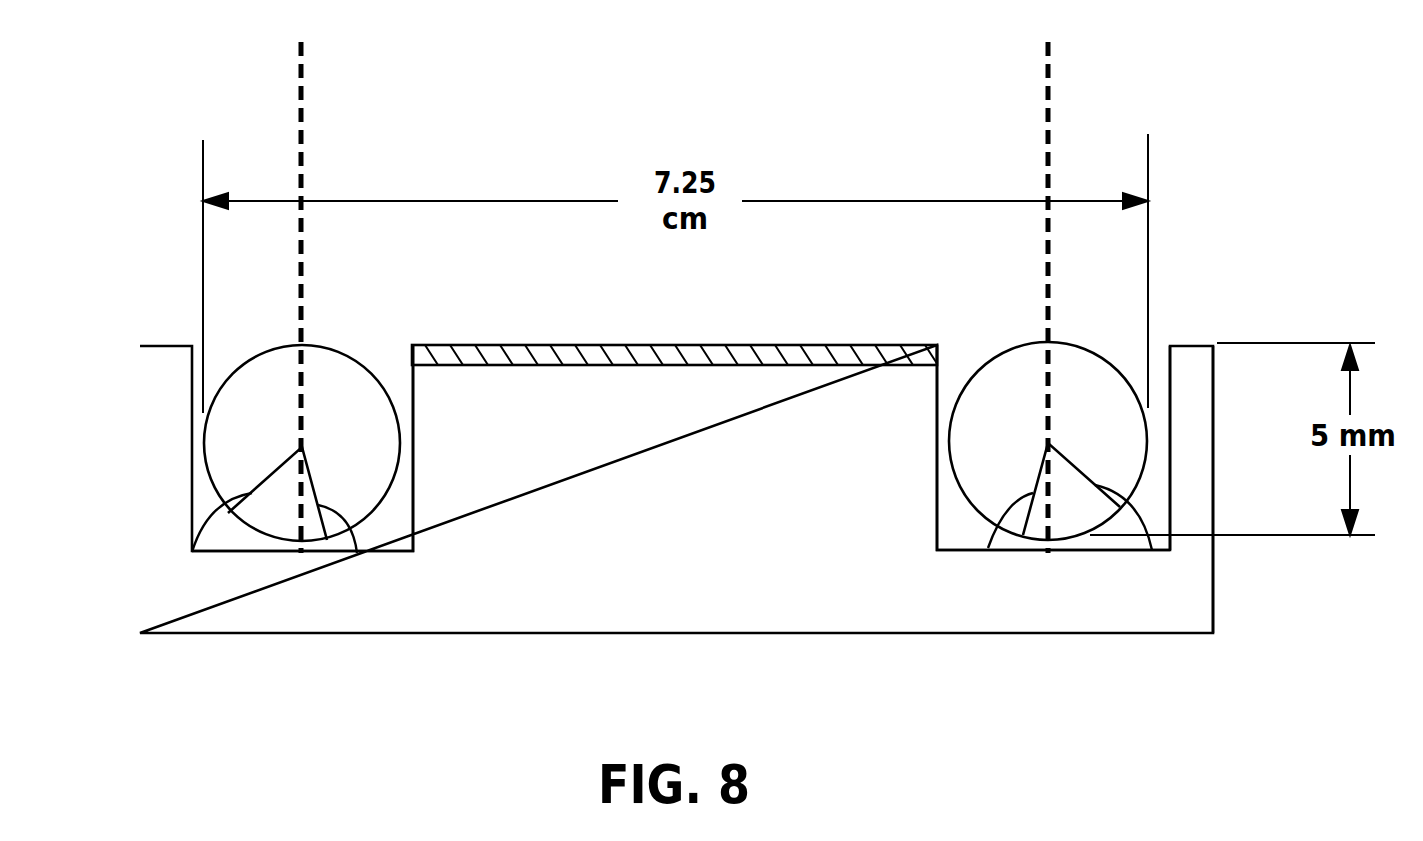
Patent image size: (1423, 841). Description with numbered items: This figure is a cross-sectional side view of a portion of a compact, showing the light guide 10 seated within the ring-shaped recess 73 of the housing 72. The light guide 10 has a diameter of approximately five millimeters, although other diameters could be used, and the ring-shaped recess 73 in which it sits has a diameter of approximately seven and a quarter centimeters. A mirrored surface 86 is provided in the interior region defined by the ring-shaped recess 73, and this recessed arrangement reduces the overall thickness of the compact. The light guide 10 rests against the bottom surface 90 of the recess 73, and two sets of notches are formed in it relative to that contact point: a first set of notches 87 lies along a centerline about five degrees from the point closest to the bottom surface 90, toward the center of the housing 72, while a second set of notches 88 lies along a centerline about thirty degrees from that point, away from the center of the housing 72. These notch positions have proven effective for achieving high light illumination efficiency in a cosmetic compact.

The light guide 10 is at (250, 359).
The housing 72 is at (1195, 353).
The ring-shaped recess 73 is at (378, 540).
The mirrored surface 86 is at (523, 345).
The first set of notches 87 is at (357, 553).
The second set of notches 88 is at (192, 552).
The bottom surface 90 is at (302, 552).